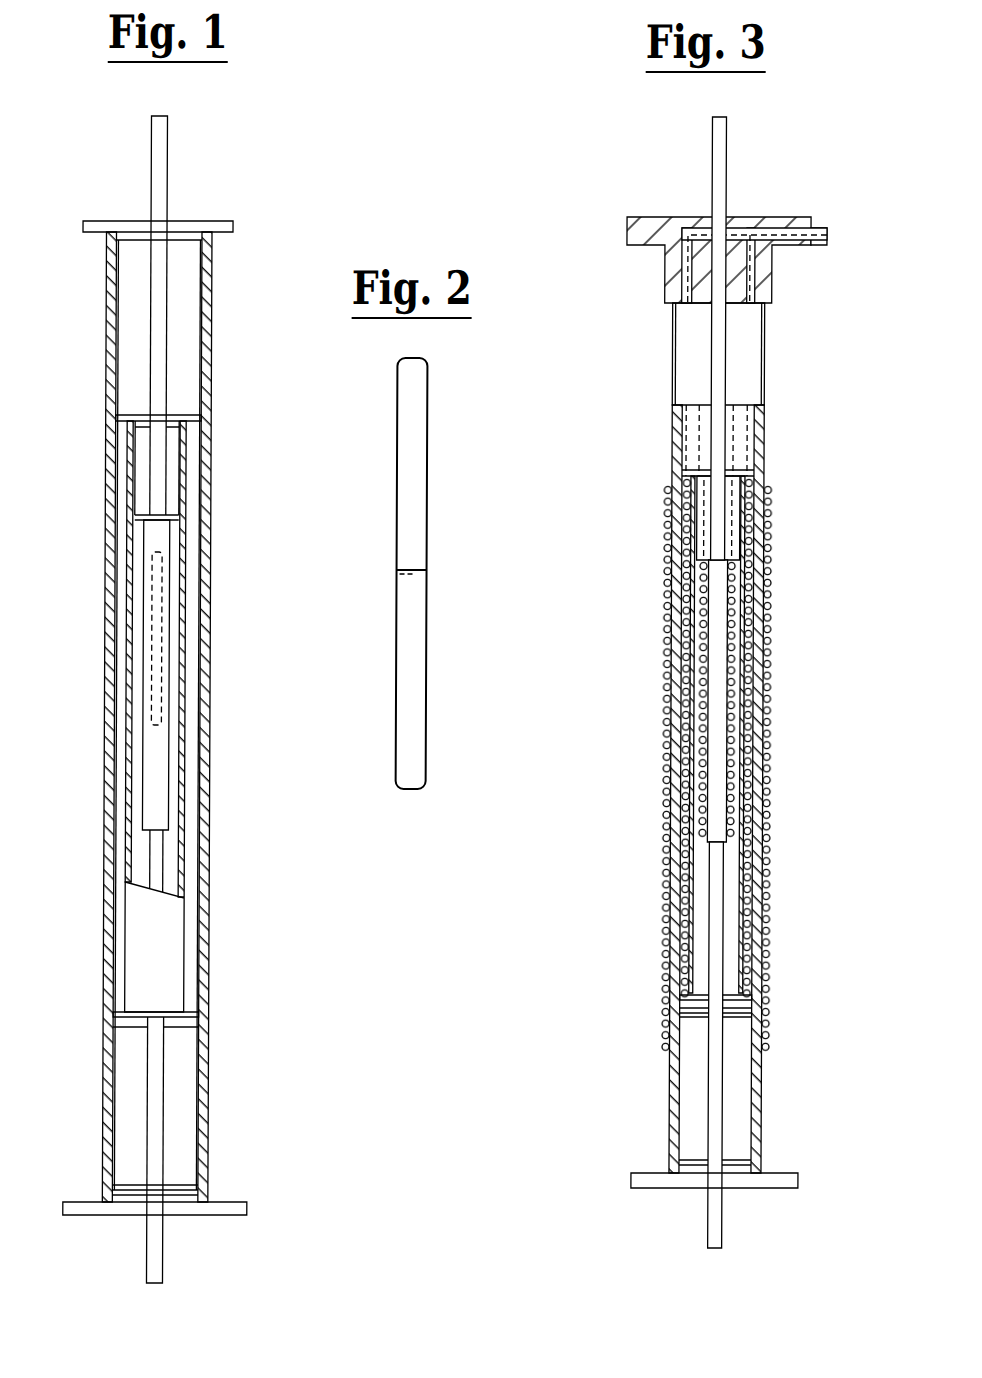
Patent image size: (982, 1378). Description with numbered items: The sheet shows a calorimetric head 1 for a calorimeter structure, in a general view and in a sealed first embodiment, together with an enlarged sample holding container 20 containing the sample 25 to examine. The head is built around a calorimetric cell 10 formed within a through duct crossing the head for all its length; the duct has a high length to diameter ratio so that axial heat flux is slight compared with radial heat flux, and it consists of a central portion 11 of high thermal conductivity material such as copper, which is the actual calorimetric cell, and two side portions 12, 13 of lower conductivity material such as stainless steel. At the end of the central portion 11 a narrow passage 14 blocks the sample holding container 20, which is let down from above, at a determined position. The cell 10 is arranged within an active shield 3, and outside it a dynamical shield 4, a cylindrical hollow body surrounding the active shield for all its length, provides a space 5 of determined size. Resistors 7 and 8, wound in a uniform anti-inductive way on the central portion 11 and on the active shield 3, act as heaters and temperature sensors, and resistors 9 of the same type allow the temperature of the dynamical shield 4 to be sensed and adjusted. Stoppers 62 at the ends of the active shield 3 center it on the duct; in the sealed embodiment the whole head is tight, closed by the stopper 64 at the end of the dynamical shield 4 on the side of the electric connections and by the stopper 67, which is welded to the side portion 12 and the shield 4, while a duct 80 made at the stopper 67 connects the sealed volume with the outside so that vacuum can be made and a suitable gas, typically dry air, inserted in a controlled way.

In FIG. 1, the calorimetric head 1 is at (271, 1031).
In FIG. 3, the calorimetric head 1 is at (806, 943).
In FIG. 1, the active shield 3 is at (128, 640).
In FIG. 3, the active shield 3 is at (672, 558).
In FIG. 1, the dynamical shield 4 is at (206, 602).
In FIG. 3, the dynamical shield 4 is at (758, 605).
In FIG. 1, the space 5 is at (192, 568).
In FIG. 3, the resistor 7 is at (695, 790).
In FIG. 3, the resistor 8 is at (748, 773).
In FIG. 3, the resistor 9 is at (666, 813).
In FIG. 1, the calorimetric cell 10 is at (120, 549).
In FIG. 3, the calorimetric cell 10 is at (710, 185).
In FIG. 1, the central portion 11 is at (160, 768).
In FIG. 1, the side portion 12 is at (158, 203).
In FIG. 1, the side portion 13 is at (159, 1242).
In FIG. 1, the narrow passage 14 is at (149, 834).
In FIG. 1, the sample holding container 20 is at (163, 630).
In FIG. 2, the sample holding container 20 is at (427, 459).
In FIG. 2, the sample 25 is at (410, 684).
In FIG. 1, the stopper 62 is at (129, 415).
In FIG. 3, the stopper 64 is at (709, 1185).
In FIG. 3, the stopper 67 is at (631, 224).
In FIG. 3, the duct 80 is at (825, 229).